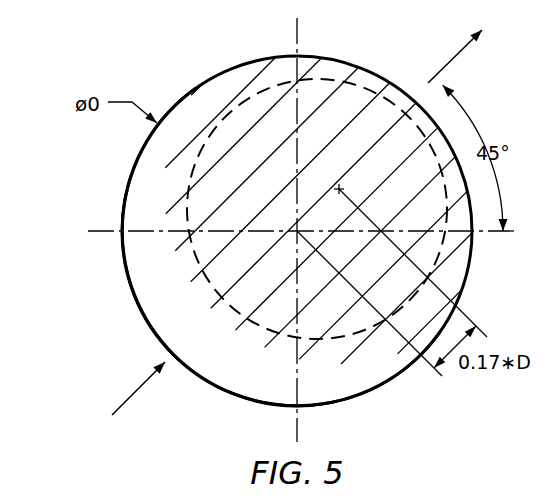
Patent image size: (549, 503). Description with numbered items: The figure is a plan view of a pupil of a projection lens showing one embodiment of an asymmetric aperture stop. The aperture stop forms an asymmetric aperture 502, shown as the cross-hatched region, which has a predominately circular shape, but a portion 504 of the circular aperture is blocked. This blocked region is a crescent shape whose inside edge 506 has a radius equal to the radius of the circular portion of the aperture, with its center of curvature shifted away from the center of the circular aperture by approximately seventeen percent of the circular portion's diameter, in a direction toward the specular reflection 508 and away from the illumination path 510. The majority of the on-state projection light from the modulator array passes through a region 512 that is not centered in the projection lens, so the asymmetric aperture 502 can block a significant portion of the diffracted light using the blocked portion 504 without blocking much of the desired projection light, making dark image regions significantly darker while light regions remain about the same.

The asymmetric aperture 502 is at (235, 88).
The blocked portion 504 is at (237, 388).
The inside edge 506 is at (360, 360).
The specular reflection 508 is at (453, 60).
The illumination path 510 is at (130, 396).
The region 512 is at (335, 80).